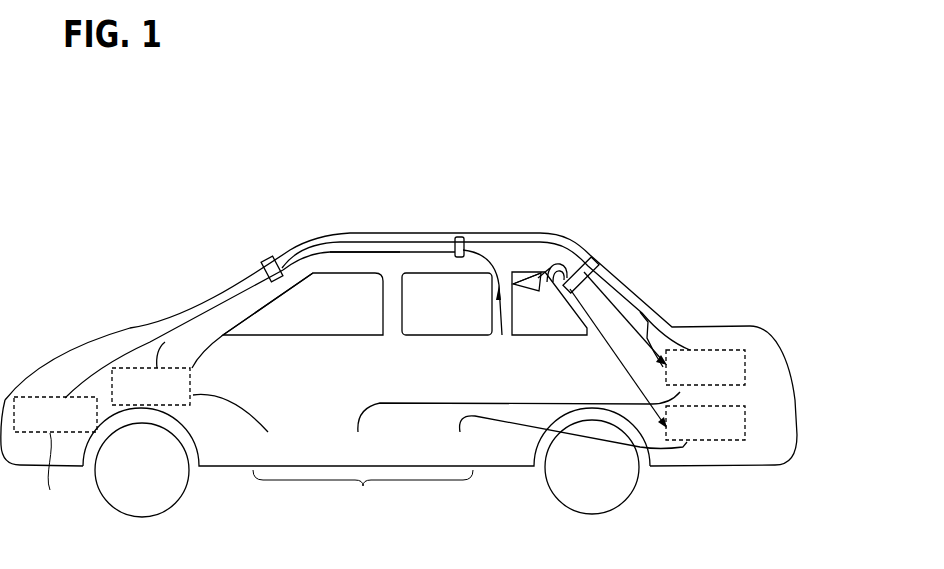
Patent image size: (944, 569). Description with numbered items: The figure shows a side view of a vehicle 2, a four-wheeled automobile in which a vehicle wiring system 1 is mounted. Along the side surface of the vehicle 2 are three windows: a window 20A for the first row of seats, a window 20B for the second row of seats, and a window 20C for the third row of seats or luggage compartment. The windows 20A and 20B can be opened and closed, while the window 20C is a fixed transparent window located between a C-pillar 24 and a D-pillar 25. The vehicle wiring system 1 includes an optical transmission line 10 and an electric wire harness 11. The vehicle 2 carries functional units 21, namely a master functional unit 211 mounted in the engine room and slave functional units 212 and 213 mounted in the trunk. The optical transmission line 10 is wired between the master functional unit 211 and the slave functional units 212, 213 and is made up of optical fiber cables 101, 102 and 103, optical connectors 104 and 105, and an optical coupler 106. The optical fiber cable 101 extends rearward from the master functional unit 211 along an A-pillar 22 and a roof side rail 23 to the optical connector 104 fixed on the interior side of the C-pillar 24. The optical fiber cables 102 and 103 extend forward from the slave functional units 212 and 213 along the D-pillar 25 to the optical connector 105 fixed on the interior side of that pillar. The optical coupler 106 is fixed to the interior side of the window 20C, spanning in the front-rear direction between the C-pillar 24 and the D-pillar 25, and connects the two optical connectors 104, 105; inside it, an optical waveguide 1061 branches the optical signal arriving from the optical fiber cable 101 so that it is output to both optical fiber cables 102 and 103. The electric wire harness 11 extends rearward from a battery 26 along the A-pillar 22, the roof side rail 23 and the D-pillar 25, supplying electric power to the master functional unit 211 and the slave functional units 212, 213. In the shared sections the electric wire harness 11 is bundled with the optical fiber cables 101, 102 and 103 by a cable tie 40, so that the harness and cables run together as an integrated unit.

The vehicle wiring system 1 is at (399, 305).
The vehicle 2 is at (399, 375).
The optical transmission line 10 is at (377, 301).
The electric wire harness 11 is at (190, 318).
The window 20A is at (315, 337).
The window 20B is at (440, 337).
The window 20C is at (548, 337).
The functional units 21 is at (440, 452).
The A-pillar 22 is at (268, 258).
The roof side rail 23 is at (405, 233).
The C-pillar 24 is at (463, 238).
The D-pillar 25 is at (600, 270).
The battery 26 is at (50, 470).
The cable tie 40 is at (458, 235).
The optical fiber cable 101 is at (327, 250).
The optical fiber cable 102 is at (607, 302).
The optical fiber cable 103 is at (645, 397).
The optical connector 104 is at (506, 290).
The optical connector 105 is at (548, 262).
The optical coupler 106 is at (512, 280).
The optical waveguide 1061 is at (523, 292).
The master functional unit 211 is at (239, 424).
The slave functional unit 212 is at (512, 423).
The slave functional unit 213 is at (565, 435).